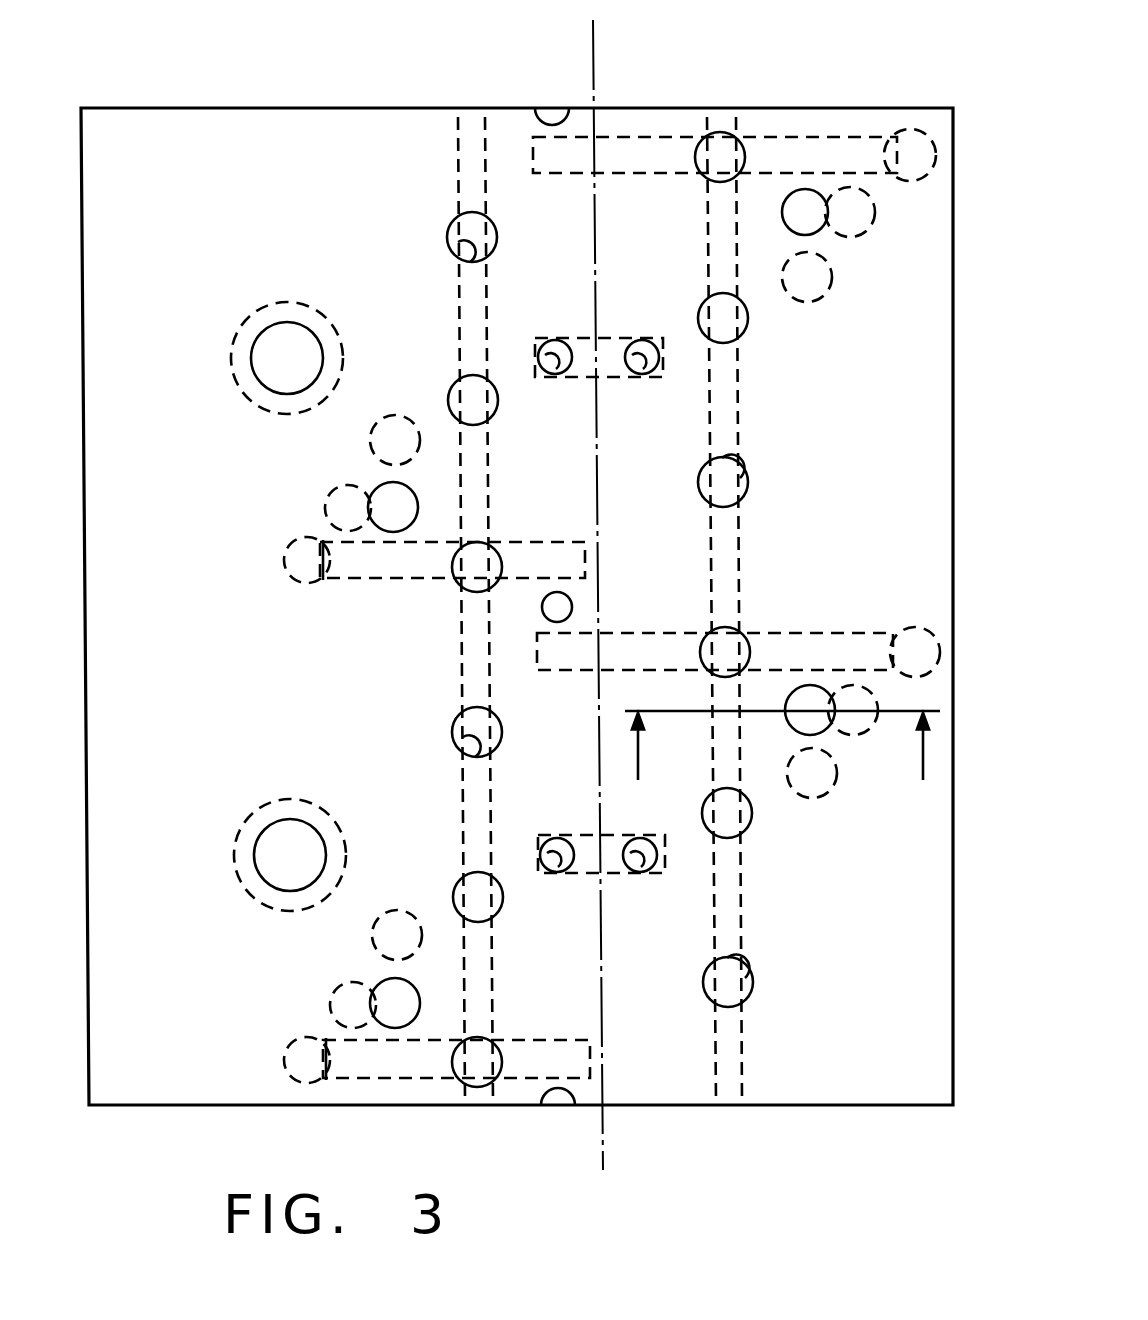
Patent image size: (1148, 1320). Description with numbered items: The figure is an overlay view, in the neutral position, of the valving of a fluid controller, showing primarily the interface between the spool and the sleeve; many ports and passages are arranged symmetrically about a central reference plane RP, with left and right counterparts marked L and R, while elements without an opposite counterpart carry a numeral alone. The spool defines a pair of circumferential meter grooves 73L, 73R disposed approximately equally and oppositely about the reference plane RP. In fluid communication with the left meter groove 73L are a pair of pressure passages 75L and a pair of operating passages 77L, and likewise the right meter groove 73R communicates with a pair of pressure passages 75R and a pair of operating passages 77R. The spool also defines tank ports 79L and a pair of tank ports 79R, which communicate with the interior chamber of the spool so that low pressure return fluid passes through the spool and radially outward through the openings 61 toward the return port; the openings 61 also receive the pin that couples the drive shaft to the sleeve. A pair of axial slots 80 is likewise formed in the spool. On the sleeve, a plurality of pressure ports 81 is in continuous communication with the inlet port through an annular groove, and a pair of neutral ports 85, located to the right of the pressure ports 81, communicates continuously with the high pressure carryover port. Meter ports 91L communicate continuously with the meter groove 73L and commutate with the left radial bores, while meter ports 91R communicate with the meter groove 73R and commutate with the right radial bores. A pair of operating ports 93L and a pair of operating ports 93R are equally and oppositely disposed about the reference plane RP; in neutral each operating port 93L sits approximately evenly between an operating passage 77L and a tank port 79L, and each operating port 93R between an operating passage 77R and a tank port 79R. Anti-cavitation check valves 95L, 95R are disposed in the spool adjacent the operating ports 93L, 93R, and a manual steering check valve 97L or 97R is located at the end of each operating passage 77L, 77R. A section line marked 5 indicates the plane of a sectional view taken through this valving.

The pin openings 61 is at (272, 306).
The meter groove 73L is at (470, 150).
The meter groove 73R is at (724, 385).
The pressure passages 75L is at (550, 548).
The pressure passages 75R is at (628, 148).
The operating passages 77L is at (378, 558).
The operating passages 77R is at (797, 160).
The tank ports 79L is at (397, 416).
The tank ports 79R is at (812, 790).
The axial slots 80 is at (607, 358).
The pressure ports 81 is at (556, 345).
The neutral ports 85 is at (642, 345).
The meter ports 91L is at (456, 237).
The meter ports 91R is at (748, 486).
The operating ports 93L is at (400, 513).
The operating ports 93R is at (808, 700).
The anti-cavitation check valves 95L is at (337, 487).
The anti-cavitation check valves 95R is at (854, 227).
The manual steering check valve 97L is at (286, 552).
The manual steering check valve 97R is at (925, 142).
The reference plane RP is at (593, 62).
The section line 5- 5 is at (782, 762).